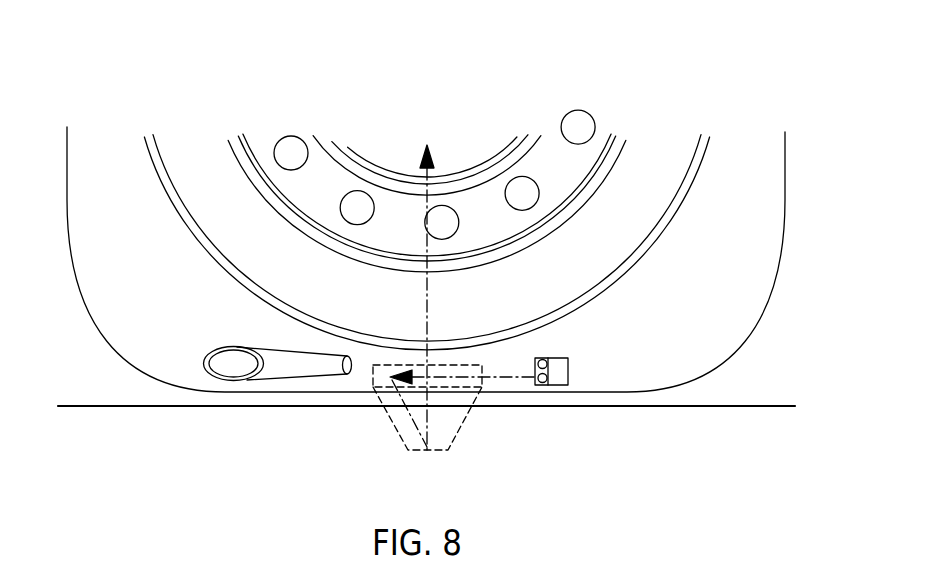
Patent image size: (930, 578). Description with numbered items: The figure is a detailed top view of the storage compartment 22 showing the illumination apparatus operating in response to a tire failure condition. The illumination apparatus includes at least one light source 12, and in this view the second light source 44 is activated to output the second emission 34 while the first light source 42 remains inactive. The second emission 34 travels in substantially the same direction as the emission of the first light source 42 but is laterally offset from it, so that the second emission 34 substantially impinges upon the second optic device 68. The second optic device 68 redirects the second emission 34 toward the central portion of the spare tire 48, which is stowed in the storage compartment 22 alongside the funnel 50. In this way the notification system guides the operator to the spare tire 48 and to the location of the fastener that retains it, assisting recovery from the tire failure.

The light source 12 is at (571, 373).
The storage compartment 22 is at (322, 146).
The second emission 34 is at (427, 244).
The first light source 42 is at (545, 362).
The second light source 44 is at (543, 382).
The spare tire 48 is at (670, 170).
The funnel 50 is at (295, 370).
The second optic device 68 is at (457, 431).